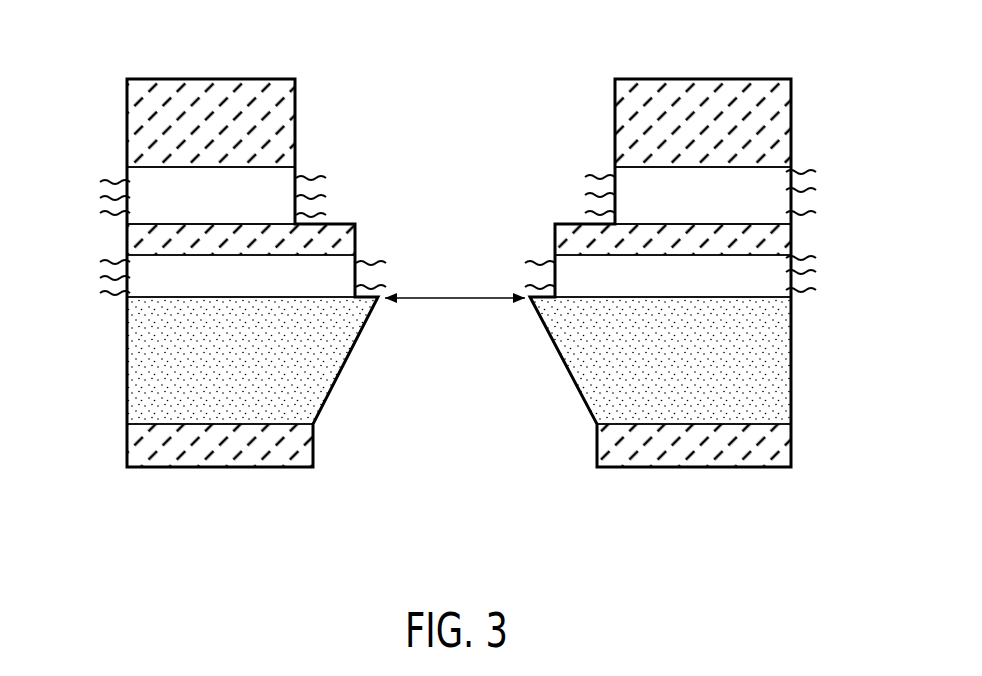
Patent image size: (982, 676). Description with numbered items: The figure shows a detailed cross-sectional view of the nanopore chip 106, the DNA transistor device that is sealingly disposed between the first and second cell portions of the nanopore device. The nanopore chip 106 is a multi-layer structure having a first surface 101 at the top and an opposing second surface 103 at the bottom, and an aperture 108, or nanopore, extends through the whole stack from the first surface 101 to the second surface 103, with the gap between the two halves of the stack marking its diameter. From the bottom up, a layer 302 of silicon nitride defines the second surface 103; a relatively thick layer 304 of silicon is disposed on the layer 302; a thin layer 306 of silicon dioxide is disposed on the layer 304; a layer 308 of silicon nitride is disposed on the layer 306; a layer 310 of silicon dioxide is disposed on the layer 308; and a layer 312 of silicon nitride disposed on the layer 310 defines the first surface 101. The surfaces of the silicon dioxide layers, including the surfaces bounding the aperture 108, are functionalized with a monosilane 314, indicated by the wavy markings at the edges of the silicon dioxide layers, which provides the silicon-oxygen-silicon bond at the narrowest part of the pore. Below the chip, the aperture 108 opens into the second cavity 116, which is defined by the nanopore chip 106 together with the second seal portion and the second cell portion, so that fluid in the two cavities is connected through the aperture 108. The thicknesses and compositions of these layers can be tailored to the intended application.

The first surface 101 is at (791, 78).
The second surface 103 is at (703, 469).
The nanopore chip 106 is at (447, 494).
The aperture 108 is at (458, 257).
The second cavity 116 is at (467, 396).
The layer 302 is at (784, 446).
The layer 304 is at (783, 366).
The layer 306 is at (792, 284).
The layer 308 is at (790, 235).
The layer 310 is at (792, 187).
The layer 312 is at (784, 121).
The monosilane 314 is at (92, 175).